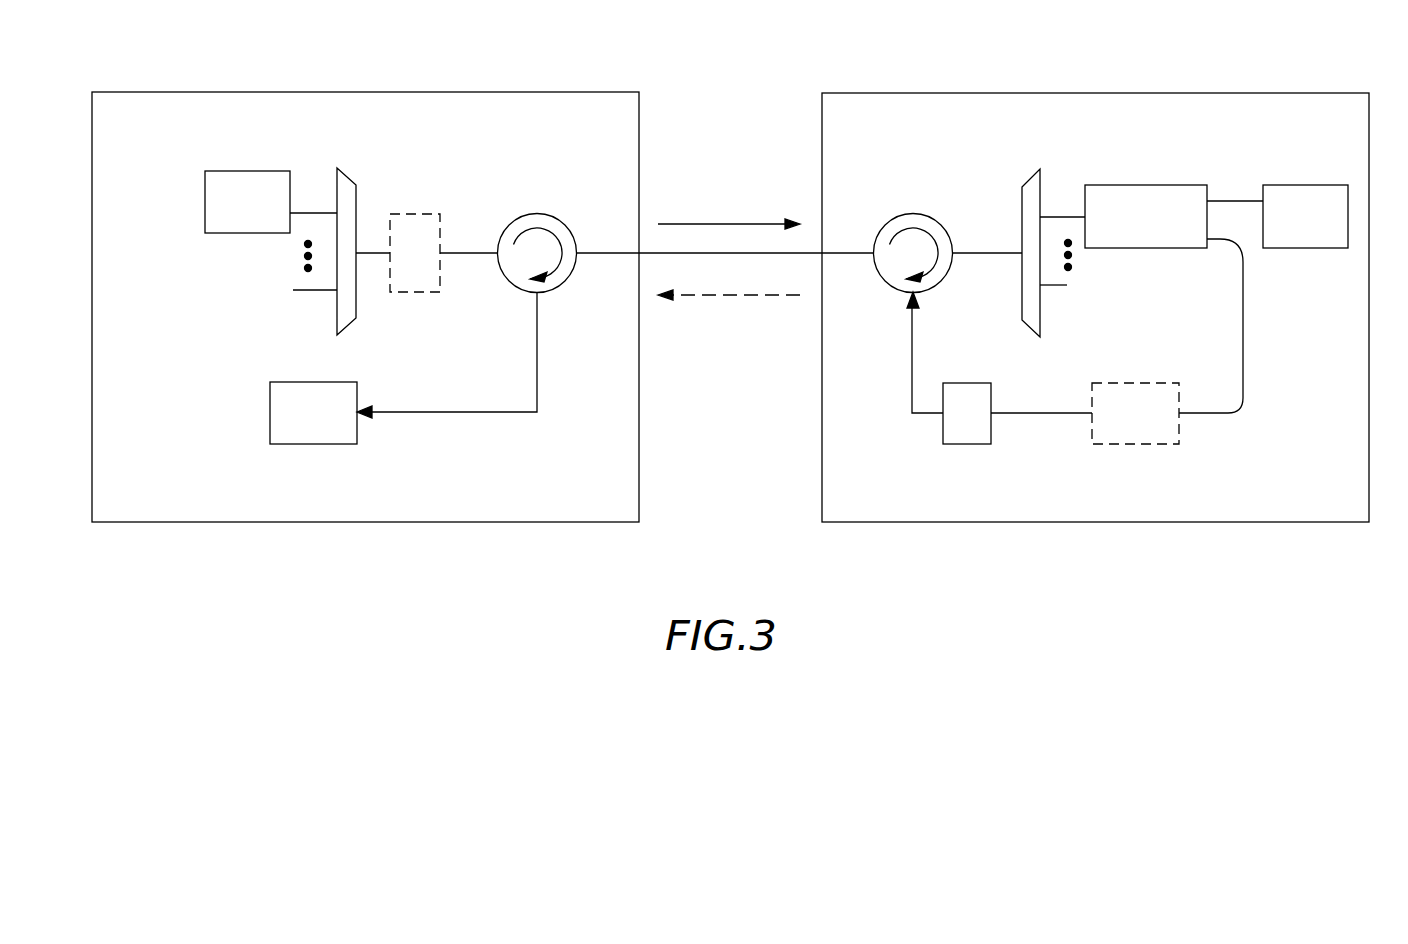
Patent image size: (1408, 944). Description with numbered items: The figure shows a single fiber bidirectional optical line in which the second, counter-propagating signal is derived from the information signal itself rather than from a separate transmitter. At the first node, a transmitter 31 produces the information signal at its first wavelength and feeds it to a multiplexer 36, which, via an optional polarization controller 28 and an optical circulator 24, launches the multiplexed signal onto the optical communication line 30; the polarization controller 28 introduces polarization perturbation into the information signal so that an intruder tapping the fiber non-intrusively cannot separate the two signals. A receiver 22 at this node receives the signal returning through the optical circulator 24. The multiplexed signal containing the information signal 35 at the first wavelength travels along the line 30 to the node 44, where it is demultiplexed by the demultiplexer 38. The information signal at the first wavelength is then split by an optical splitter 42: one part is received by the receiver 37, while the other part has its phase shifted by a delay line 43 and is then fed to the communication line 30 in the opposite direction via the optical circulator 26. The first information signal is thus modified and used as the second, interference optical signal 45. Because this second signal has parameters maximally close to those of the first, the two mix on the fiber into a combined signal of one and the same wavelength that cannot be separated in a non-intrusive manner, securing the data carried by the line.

The optical splitter 42 is at (603, 92).
The node 44 is at (1333, 93).
The optical communication line 30 is at (695, 122).
The transmitter 31 is at (247, 171).
The multiplexer 36 is at (346, 177).
The polarization controller 28 is at (415, 214).
The optical circulator 24 is at (538, 214).
The receiver 22 is at (322, 382).
The information signal 35 is at (727, 223).
The second optical signal 45 is at (727, 297).
The optical circulator 26 is at (912, 214).
The demultiplexer 38 is at (1032, 173).
The receiver 37 is at (1305, 185).
The delay line 43 is at (967, 383).